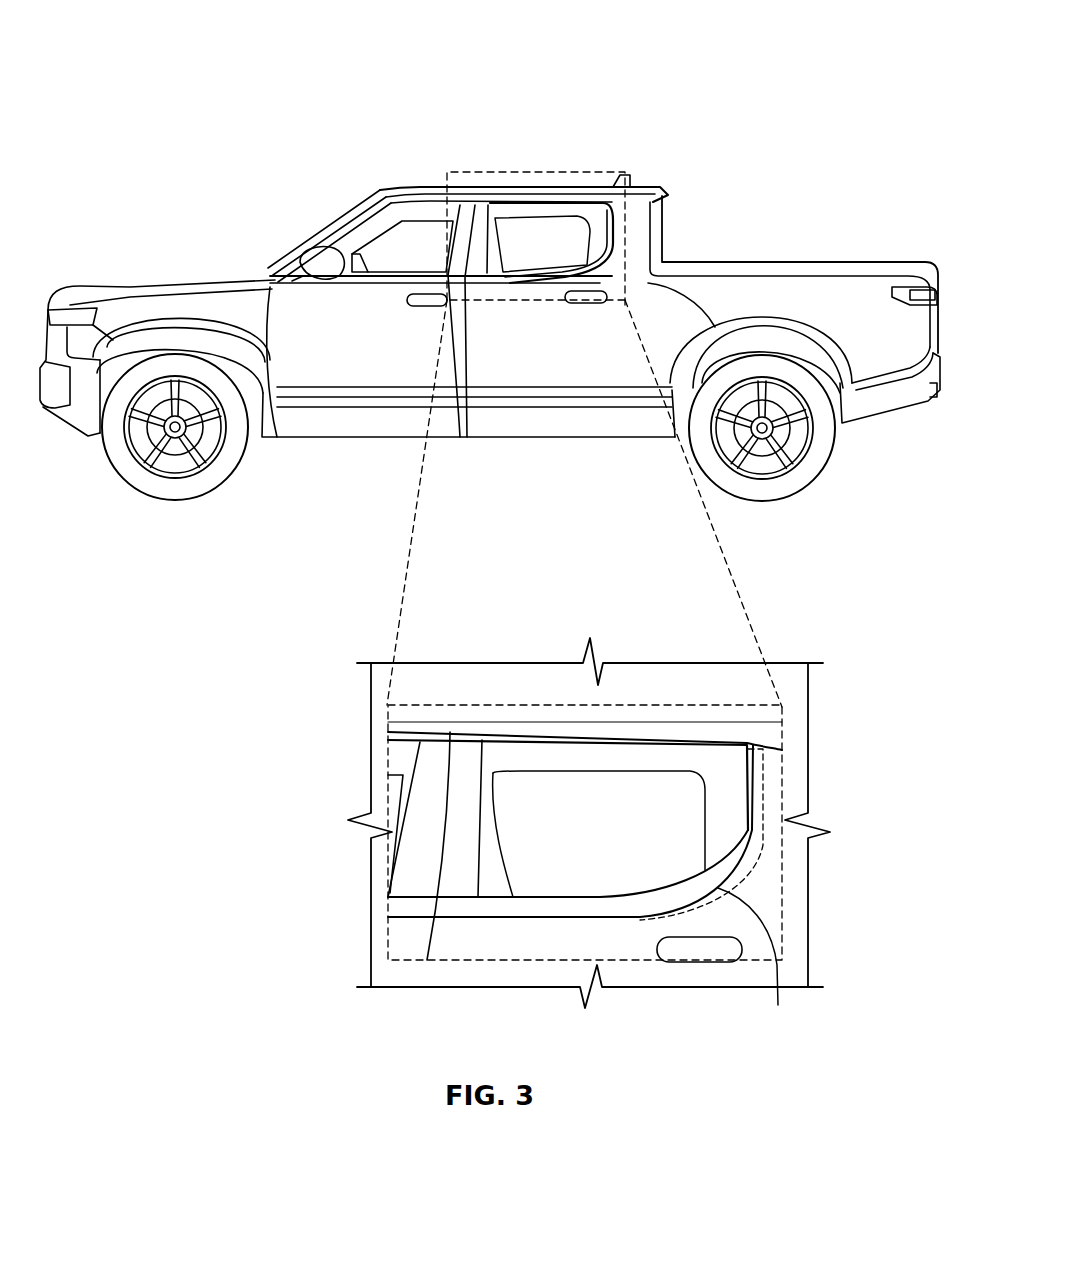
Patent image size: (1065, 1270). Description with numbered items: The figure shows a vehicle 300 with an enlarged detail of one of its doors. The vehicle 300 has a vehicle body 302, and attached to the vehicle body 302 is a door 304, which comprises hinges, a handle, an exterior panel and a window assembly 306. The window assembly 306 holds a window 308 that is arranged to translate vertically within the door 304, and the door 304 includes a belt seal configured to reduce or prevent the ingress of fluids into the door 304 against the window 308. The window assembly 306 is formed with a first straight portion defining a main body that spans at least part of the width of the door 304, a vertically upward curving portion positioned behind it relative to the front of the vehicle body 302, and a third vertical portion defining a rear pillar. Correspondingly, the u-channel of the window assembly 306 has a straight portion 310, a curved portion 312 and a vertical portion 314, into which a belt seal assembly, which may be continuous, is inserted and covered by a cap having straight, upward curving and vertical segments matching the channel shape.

The vehicle 300 is at (122, 50).
The vehicle body 302 is at (187, 292).
The door 304 is at (483, 335).
The window assembly 306 is at (578, 243).
The window 308 is at (637, 803).
The straight portion 310 is at (533, 918).
The curved portion 312 is at (760, 963).
The vertical portion 314 is at (765, 800).